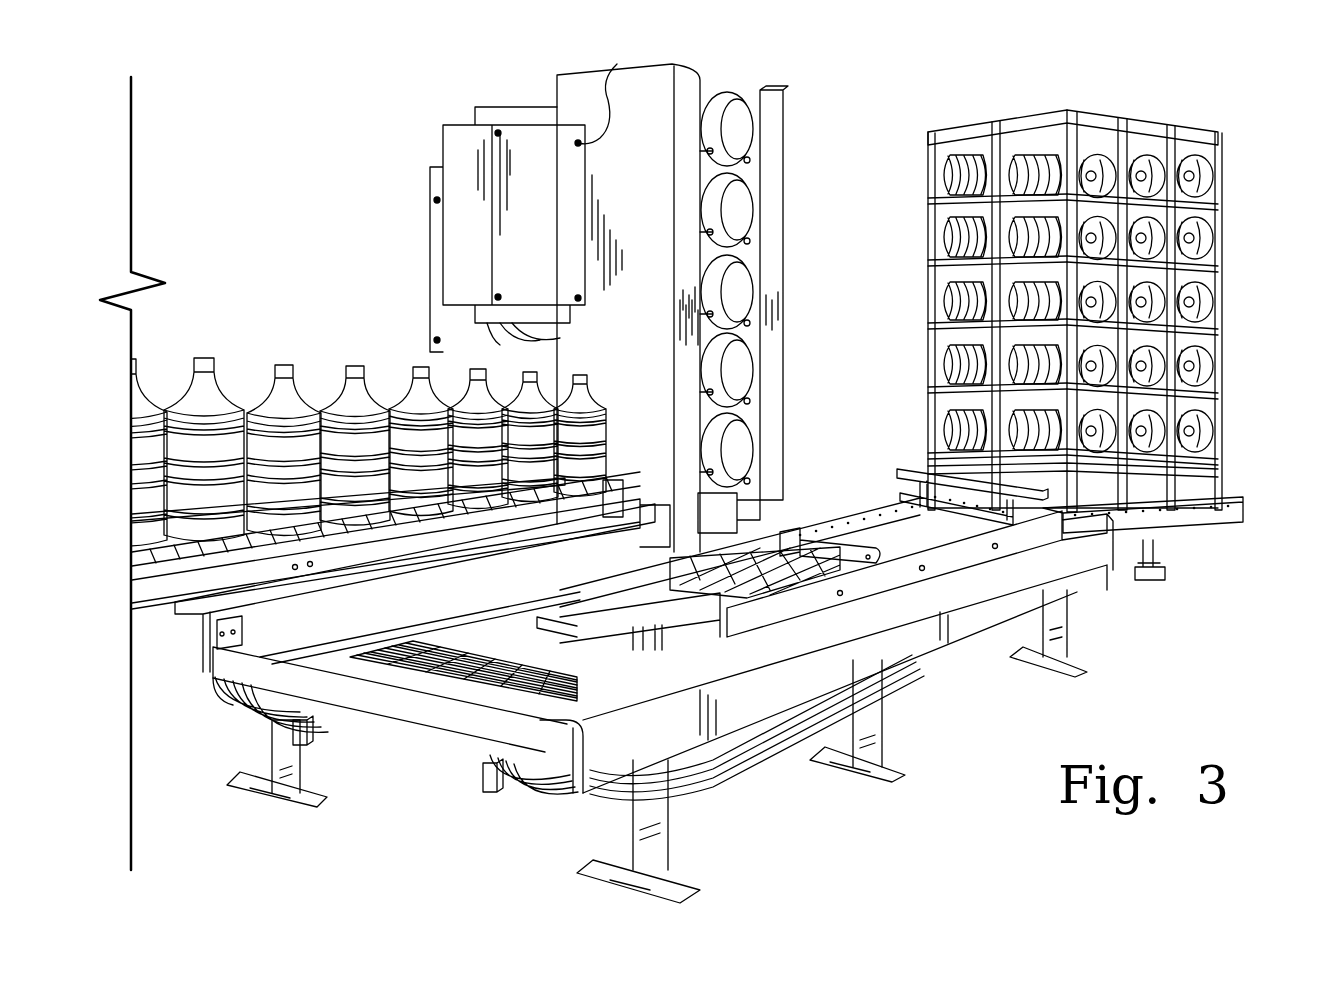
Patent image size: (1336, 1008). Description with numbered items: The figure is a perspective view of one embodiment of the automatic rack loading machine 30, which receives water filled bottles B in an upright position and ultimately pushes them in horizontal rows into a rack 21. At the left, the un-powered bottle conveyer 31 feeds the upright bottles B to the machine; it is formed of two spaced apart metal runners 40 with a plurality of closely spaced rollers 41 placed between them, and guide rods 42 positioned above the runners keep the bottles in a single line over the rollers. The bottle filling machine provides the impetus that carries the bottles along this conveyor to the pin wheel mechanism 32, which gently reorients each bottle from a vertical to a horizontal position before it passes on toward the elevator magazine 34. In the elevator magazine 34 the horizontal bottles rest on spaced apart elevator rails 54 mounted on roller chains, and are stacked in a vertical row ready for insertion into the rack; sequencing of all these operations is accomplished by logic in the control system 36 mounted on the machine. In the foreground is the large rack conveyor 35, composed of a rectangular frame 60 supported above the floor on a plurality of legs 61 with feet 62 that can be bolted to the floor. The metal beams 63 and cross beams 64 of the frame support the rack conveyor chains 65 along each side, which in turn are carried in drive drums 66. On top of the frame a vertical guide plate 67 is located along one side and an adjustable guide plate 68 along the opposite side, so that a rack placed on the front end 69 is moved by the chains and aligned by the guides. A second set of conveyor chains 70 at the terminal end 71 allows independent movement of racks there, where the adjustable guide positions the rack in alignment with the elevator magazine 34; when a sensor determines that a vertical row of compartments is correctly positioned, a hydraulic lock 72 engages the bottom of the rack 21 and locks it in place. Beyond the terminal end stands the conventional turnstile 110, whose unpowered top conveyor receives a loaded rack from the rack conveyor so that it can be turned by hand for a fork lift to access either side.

The rack 21 is at (1222, 168).
The automatic rack loading machine 30 is at (835, 131).
The bottle conveyer 31 is at (160, 603).
The pin wheel mechanism 32 is at (630, 487).
The elevator magazine 34 is at (787, 365).
The rack conveyor 35 is at (570, 793).
The control system 36 is at (560, 247).
The metal runners 40 is at (150, 590).
The rollers 41 is at (148, 538).
The guide rods 42 is at (148, 508).
The elevator rails 54 is at (748, 237).
The rectangular frame 60 is at (930, 653).
The legs 61 is at (300, 773).
The feet 62 is at (305, 805).
The metal beams 63 is at (644, 756).
The cross beams 64 is at (233, 700).
The rack conveyor chains 65 is at (250, 713).
The drive drums 66 is at (320, 717).
The vertical guide plate 67 is at (478, 594).
The adjustable guide plate 68 is at (963, 553).
The front end 69 is at (462, 723).
The conveyor chains 70 is at (1035, 618).
The terminal end 71 is at (1165, 555).
The hydraulic lock 72 is at (807, 530).
The turnstile 110 is at (1250, 527).
The bottles B is at (278, 356).